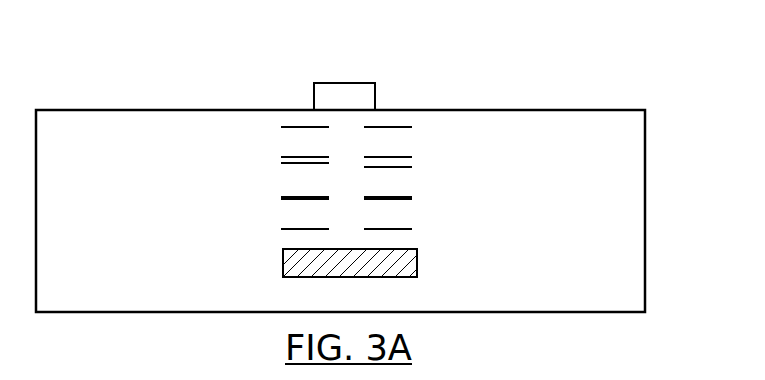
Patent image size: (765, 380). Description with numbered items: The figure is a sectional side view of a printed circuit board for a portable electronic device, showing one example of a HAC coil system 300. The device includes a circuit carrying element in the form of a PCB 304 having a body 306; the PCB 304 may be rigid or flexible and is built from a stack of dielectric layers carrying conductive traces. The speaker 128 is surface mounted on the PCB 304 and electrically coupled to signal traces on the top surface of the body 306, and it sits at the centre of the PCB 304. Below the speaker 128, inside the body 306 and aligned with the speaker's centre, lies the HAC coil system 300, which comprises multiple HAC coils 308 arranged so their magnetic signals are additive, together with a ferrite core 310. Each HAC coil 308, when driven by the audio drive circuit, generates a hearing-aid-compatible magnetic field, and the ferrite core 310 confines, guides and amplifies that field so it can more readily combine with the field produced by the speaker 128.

The HAC coil system 300 is at (593, 40).
The PCB 304 is at (602, 110).
The body 306 is at (602, 121).
The speaker 128 is at (343, 83).
The HAC coils 308 is at (423, 138).
The ferrite core 310 is at (283, 260).